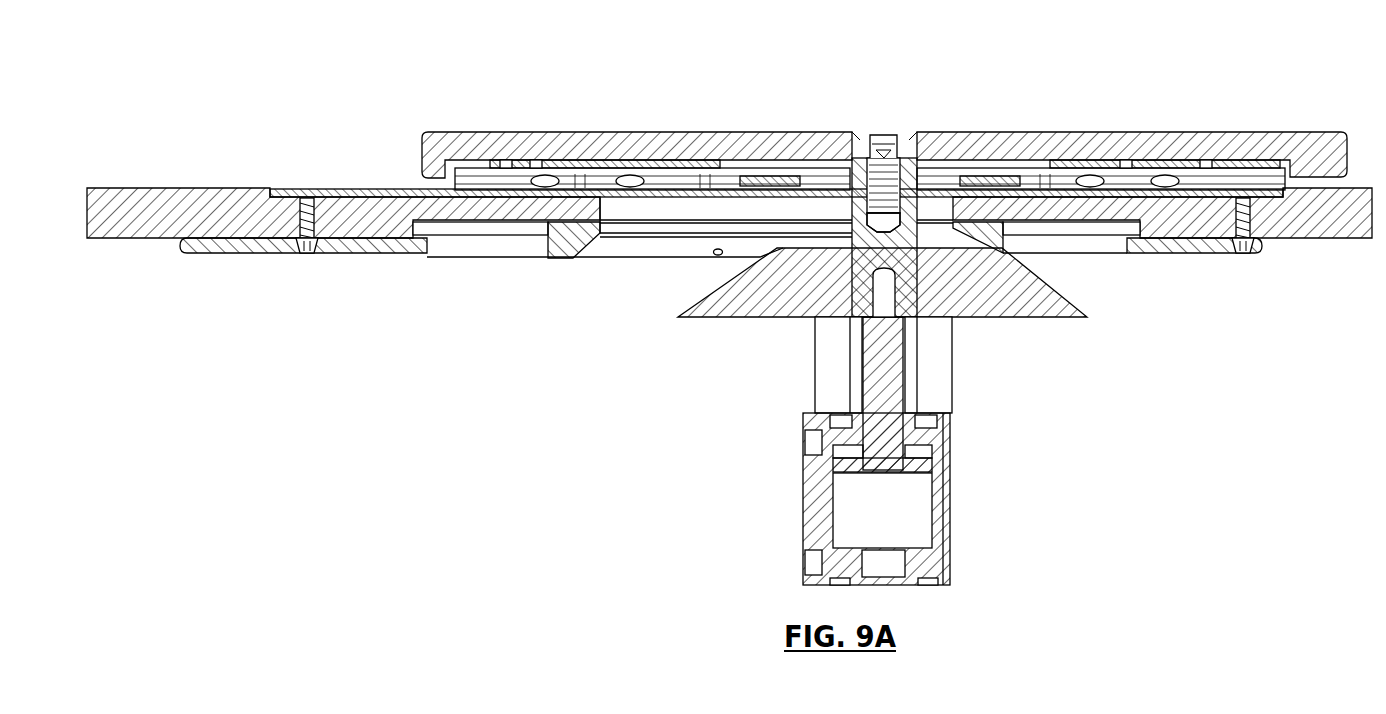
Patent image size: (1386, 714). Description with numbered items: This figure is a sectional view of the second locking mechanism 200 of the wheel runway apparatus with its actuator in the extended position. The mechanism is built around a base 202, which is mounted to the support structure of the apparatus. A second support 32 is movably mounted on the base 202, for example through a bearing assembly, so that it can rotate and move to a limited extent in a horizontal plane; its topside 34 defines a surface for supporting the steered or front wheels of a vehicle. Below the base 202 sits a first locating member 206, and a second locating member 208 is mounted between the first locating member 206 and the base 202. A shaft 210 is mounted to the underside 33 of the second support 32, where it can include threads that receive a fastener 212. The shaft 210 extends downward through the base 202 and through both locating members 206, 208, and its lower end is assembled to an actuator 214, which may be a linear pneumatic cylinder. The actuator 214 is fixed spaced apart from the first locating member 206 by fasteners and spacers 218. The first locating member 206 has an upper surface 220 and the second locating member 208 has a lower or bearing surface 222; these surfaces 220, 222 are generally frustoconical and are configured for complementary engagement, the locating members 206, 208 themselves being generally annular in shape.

The second locking mechanism 200 is at (600, 452).
The base 202 is at (215, 207).
The second support 32 is at (620, 132).
The underside 33 is at (856, 132).
The topside 34 is at (690, 132).
The first locating member 206 is at (742, 298).
The second locating member 208 is at (545, 235).
The shaft 210 is at (857, 222).
The fastener 212 is at (912, 132).
The actuator 214 is at (812, 516).
The spacers 218 is at (825, 372).
The upper surface 220 is at (706, 290).
The lower surface 222 is at (573, 258).